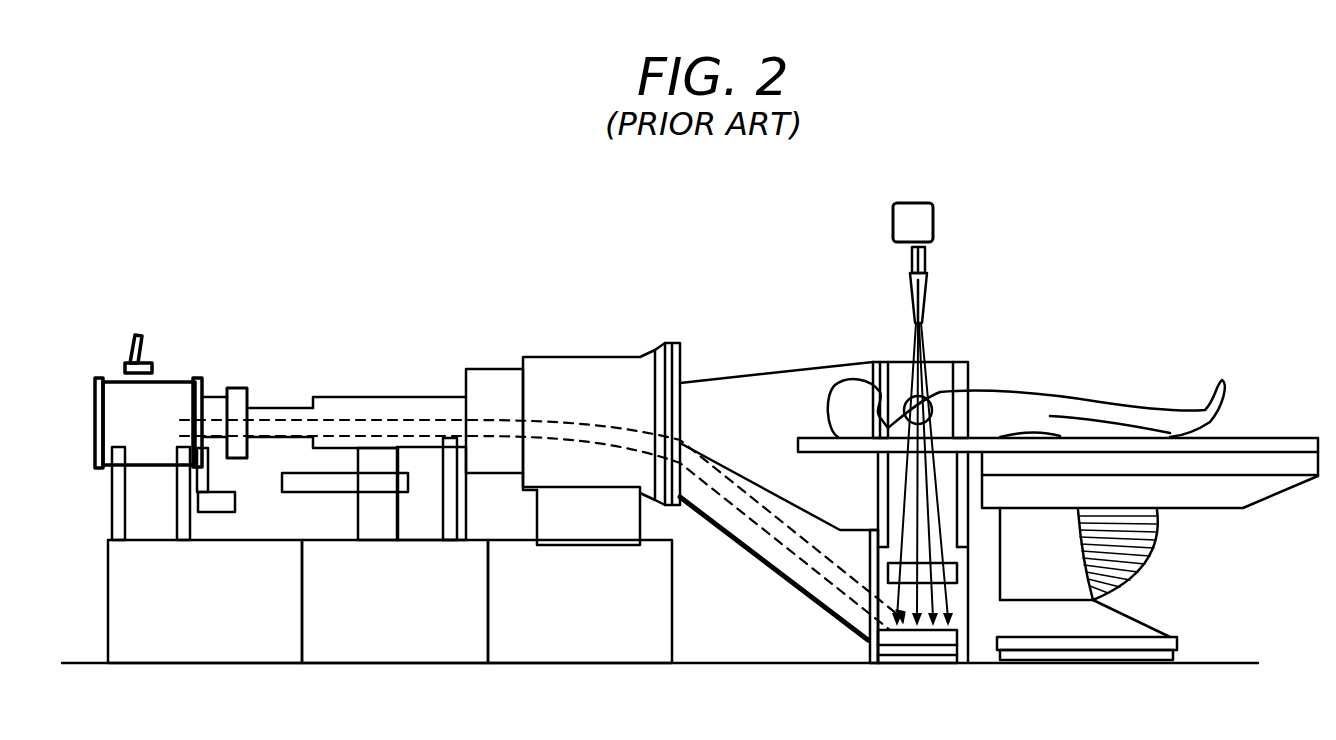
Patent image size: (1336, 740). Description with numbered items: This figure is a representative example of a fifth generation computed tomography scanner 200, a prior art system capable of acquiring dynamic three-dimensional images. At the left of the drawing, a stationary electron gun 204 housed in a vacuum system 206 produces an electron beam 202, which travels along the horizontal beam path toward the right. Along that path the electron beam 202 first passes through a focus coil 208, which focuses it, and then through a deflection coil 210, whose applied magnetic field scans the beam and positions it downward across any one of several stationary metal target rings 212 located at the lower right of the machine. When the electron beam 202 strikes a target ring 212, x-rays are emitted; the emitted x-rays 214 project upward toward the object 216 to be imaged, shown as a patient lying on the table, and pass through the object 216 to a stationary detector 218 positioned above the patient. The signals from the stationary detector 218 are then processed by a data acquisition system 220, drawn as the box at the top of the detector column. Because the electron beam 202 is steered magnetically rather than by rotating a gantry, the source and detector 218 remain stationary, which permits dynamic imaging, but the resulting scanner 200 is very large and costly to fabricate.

The fifth generation CT scanner 200 is at (142, 360).
The electron beam 202 is at (355, 405).
The stationary electron gun 204 is at (210, 402).
The vacuum system 206 is at (367, 507).
The focus coil 208 is at (497, 380).
The deflection coil 210 is at (585, 375).
The stationary metal target rings 212 is at (852, 647).
The emitted x-rays 214 is at (927, 308).
The object to be imaged 216 is at (1023, 429).
The stationary detector 218 is at (925, 258).
The data acquisition system 220 is at (937, 220).